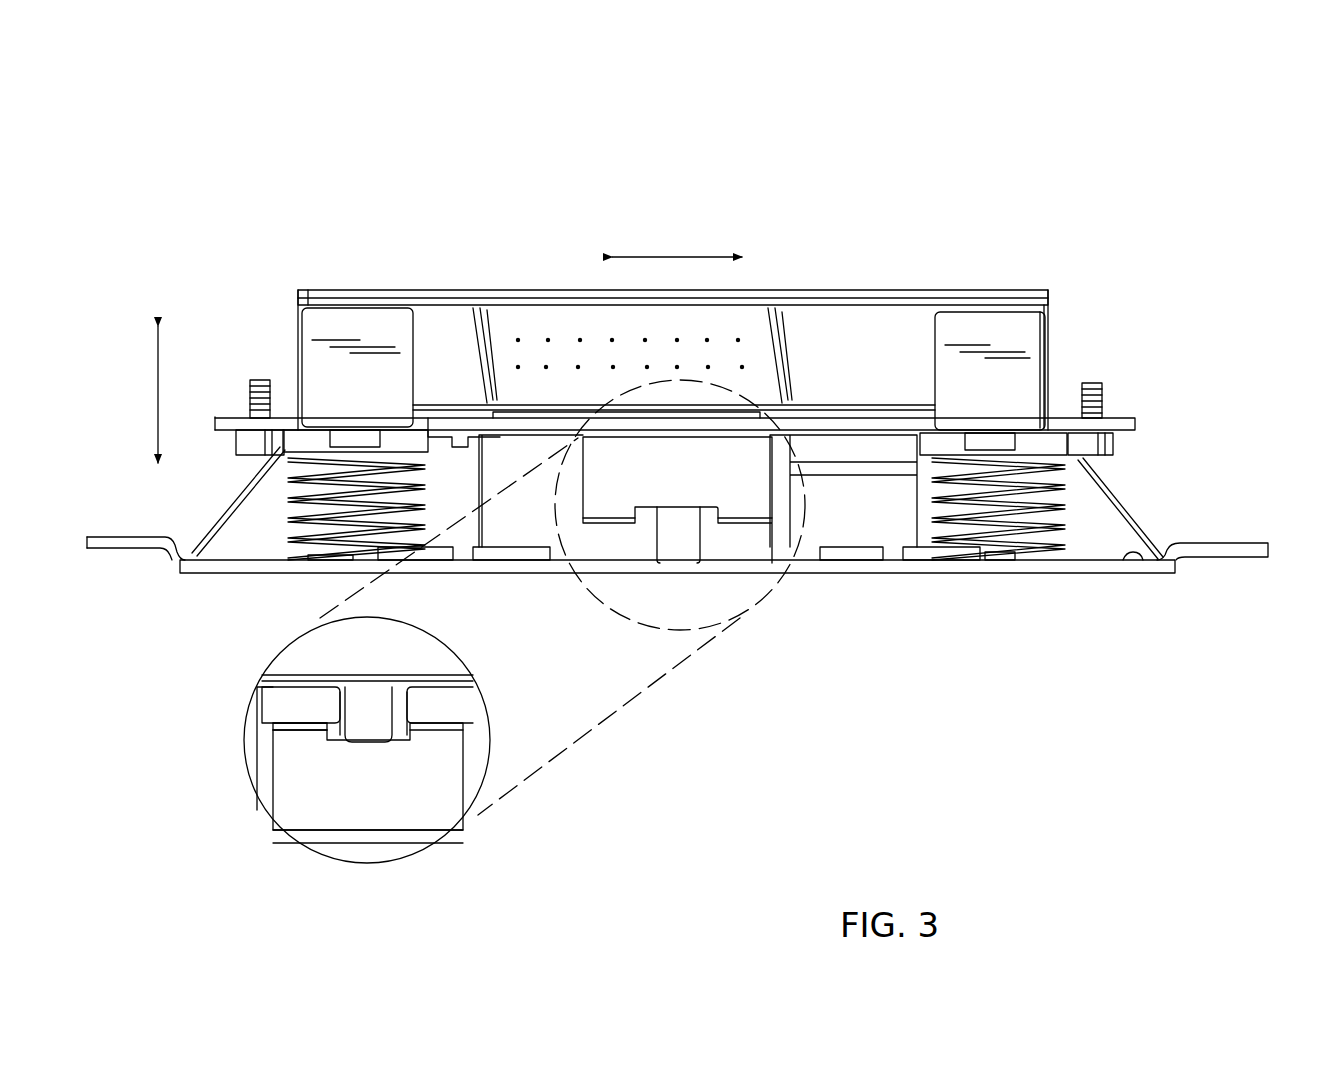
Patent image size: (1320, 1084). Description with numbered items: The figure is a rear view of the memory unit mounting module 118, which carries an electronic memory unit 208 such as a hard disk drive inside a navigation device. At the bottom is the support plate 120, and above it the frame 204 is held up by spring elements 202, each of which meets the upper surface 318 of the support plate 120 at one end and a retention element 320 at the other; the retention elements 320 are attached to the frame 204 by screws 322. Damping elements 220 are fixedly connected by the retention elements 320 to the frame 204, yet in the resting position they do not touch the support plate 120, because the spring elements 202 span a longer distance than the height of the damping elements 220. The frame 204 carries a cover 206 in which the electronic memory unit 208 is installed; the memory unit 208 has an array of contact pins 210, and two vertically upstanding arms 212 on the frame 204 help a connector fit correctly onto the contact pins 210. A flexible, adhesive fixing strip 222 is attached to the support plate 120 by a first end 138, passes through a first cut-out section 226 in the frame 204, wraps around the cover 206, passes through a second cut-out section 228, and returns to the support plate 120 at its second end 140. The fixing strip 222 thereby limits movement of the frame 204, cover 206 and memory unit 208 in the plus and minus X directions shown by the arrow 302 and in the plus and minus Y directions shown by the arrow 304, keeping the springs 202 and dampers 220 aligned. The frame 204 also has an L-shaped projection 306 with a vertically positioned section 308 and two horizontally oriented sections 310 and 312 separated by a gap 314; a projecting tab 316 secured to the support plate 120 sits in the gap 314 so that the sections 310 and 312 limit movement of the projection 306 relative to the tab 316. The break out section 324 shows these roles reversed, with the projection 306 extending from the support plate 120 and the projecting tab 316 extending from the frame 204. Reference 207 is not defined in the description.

The memory unit mounting module 118 is at (1087, 322).
The support plate 120 is at (1229, 542).
The first end 138 is at (173, 552).
The second end 140 is at (1155, 527).
The spring elements 202 is at (308, 500).
The frame 204 is at (1135, 425).
The cover 206 is at (868, 305).
The right spring support 207 is at (1060, 515).
The electronic memory unit 208 is at (797, 302).
The contact pins 210 is at (527, 330).
The vertically upstanding arms 212 is at (673, 369).
The damping elements 220 is at (252, 484).
The fixing strip 222 is at (1120, 497).
The first cut-out section 226 is at (237, 425).
The second cut-out section 228 is at (1055, 426).
The arrow 302 is at (168, 378).
The arrow 304 is at (667, 257).
The projection 306 is at (587, 632).
The vertically positioned section 308 is at (290, 755).
The horizontally oriented section 310 is at (430, 725).
The horizontally oriented section 312 is at (310, 722).
The gap 314 is at (400, 732).
The projecting tab 316 is at (362, 700).
The upper surface 318 is at (1143, 565).
The retention elements 320 is at (298, 437).
The screws 322 is at (1103, 399).
The break out section 324 is at (493, 717).